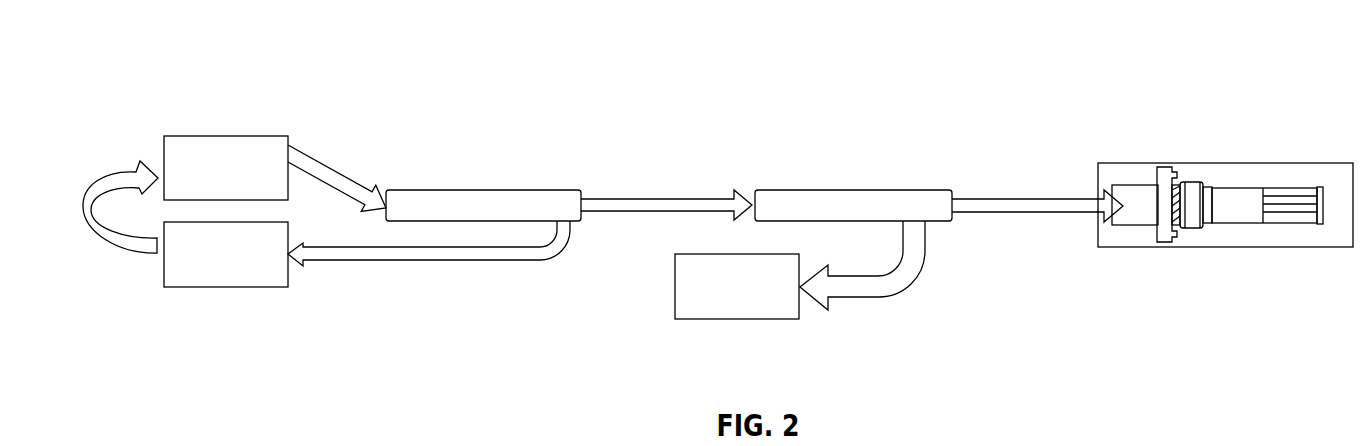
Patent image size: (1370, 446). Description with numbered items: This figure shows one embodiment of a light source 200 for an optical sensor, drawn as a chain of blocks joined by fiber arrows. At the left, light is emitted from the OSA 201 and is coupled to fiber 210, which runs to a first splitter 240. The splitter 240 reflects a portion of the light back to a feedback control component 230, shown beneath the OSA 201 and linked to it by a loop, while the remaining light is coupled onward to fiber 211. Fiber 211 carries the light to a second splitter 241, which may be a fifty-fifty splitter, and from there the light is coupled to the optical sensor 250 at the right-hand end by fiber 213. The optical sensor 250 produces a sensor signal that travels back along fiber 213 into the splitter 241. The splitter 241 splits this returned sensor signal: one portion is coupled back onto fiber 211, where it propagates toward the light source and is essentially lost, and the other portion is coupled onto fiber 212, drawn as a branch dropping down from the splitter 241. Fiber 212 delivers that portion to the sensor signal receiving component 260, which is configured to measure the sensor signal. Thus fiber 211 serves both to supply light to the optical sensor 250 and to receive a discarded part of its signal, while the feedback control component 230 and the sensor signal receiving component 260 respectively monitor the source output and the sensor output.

The light source 200 is at (597, 57).
The OSA 201 is at (195, 135).
The fiber 210 is at (333, 167).
The fiber 211 is at (662, 195).
The fiber 212 is at (887, 297).
The fiber 213 is at (1010, 195).
The feedback control component 230 is at (172, 272).
The splitter 240 is at (513, 187).
The splitter 241 is at (775, 188).
The optical sensor 250 is at (1145, 163).
The sensor signal receiving component 260 is at (777, 320).